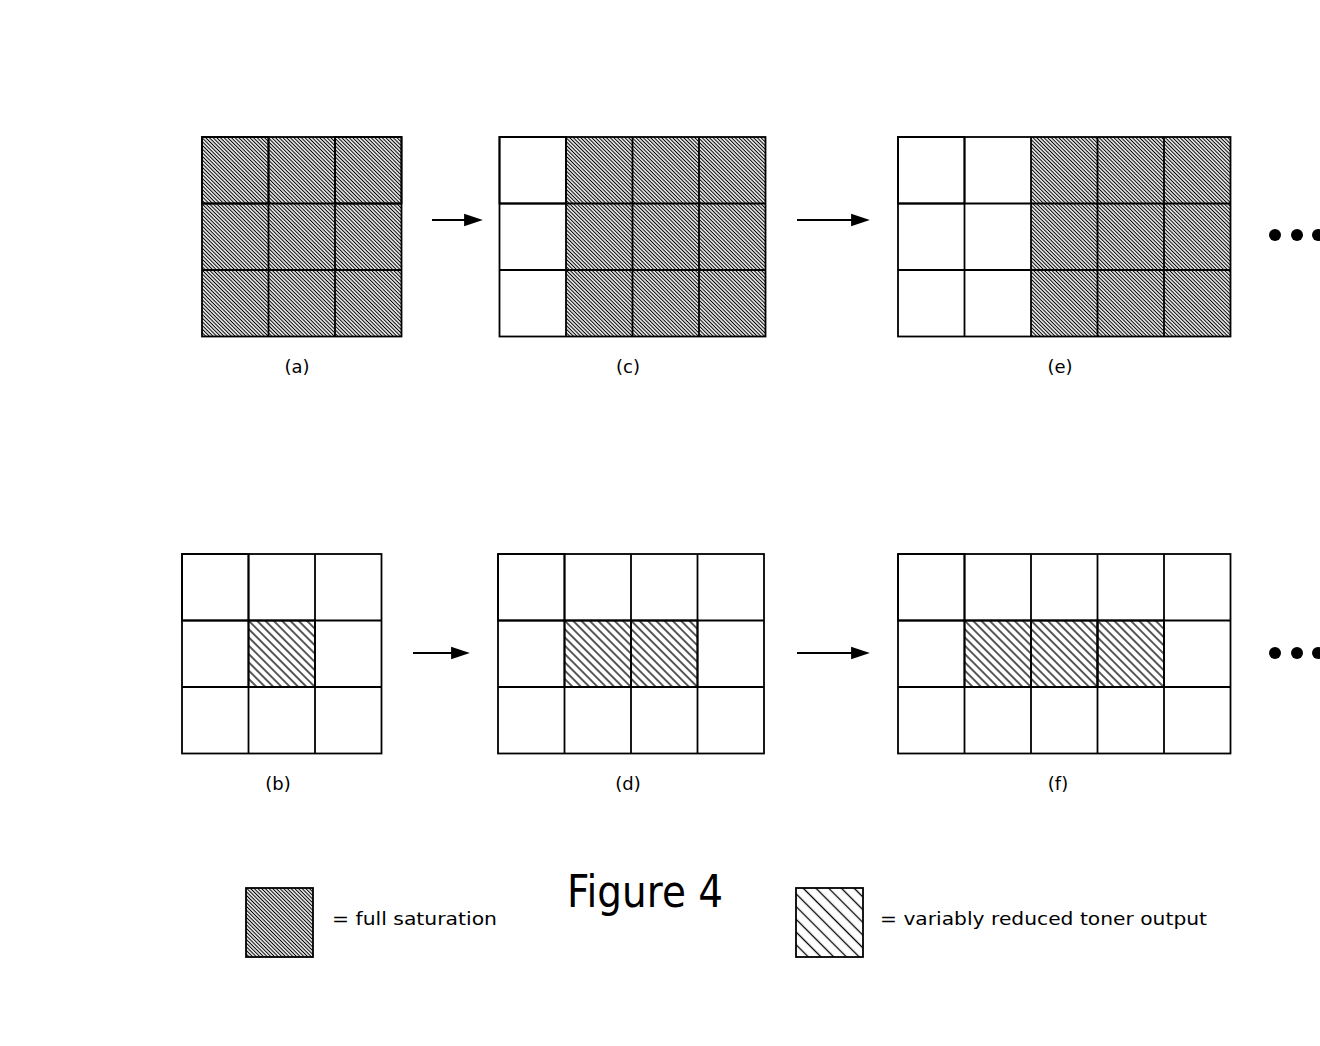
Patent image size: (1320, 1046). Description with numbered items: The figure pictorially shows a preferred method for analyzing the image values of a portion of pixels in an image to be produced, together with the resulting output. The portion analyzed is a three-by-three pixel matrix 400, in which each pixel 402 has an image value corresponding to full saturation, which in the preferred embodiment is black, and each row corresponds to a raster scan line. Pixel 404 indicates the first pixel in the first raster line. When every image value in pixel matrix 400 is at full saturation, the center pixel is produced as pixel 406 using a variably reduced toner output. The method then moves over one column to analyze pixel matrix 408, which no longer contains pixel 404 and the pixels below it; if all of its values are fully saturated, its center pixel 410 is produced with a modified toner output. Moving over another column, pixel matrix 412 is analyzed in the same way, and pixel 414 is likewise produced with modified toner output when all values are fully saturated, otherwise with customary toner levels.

The pixel matrix 400 is at (406, 361).
The pixel 402 is at (368, 155).
The pixel 404 is at (234, 155).
The pixel 406 is at (282, 653).
The pixel matrix 408 is at (756, 361).
The pixel 410 is at (665, 653).
The pixel matrix 412 is at (1221, 361).
The pixel 414 is at (1130, 653).